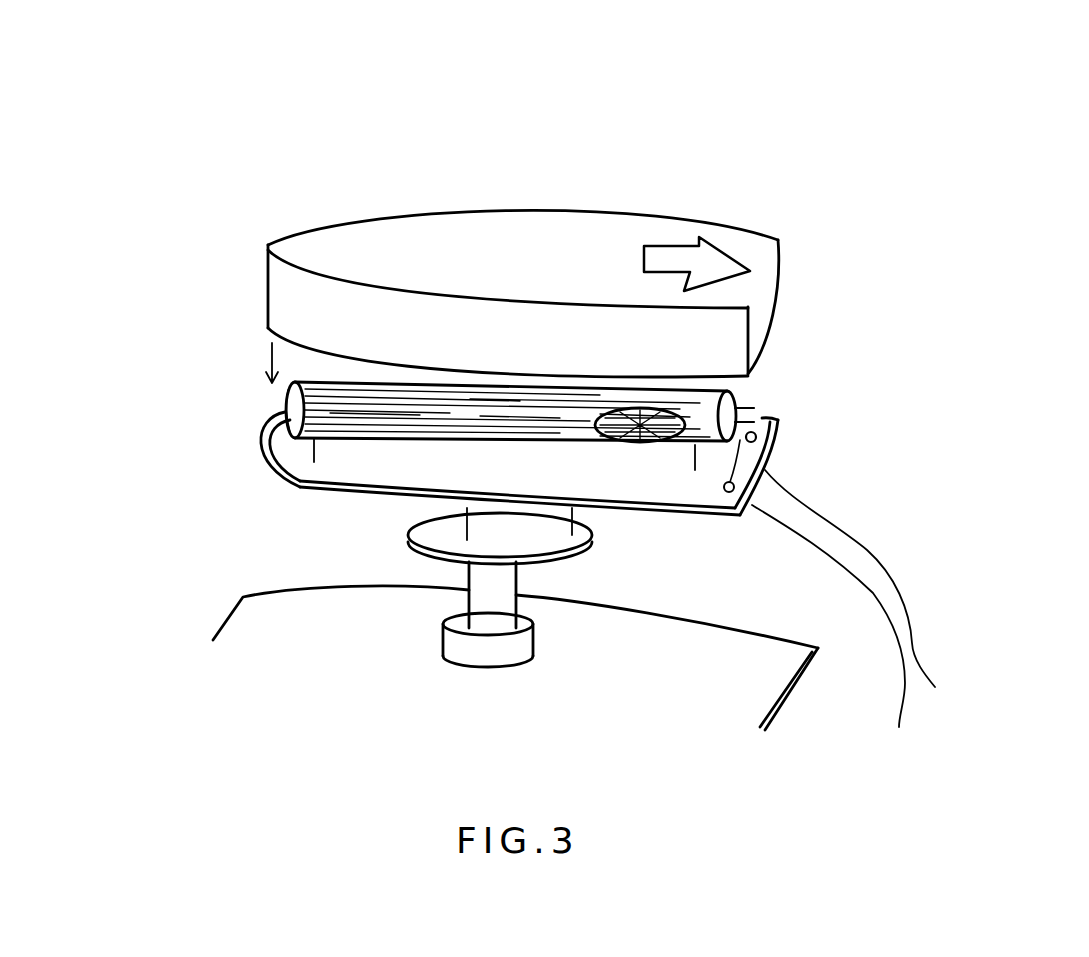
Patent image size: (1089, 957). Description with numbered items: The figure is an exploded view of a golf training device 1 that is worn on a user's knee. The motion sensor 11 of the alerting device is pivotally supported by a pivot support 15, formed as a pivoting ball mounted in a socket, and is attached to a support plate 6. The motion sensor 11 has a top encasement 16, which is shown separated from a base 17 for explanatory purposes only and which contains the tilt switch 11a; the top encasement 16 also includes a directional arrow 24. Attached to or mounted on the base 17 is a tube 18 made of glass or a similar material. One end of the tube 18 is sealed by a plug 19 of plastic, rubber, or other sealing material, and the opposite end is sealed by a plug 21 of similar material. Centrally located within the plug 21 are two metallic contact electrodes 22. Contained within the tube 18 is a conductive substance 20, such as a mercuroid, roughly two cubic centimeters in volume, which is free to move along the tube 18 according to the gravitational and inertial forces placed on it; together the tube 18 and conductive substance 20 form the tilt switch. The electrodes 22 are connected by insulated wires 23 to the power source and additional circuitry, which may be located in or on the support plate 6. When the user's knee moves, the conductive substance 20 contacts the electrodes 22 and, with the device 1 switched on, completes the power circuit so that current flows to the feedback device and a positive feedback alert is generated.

The golf training device 1 is at (234, 132).
The motion sensor 11 is at (992, 228).
The tilt switch 11a is at (212, 355).
The top encasement 16 is at (560, 242).
The directional arrow 24 is at (718, 262).
The base 17 is at (778, 422).
The metallic contact electrodes 22 is at (740, 412).
The plug 21 is at (745, 405).
The tube 18 is at (362, 437).
The plug 19 is at (287, 408).
The conductive substance 20 is at (637, 442).
The pivot support 15 is at (487, 593).
The support plate 6 is at (730, 712).
The insulated wires 23 is at (797, 530).